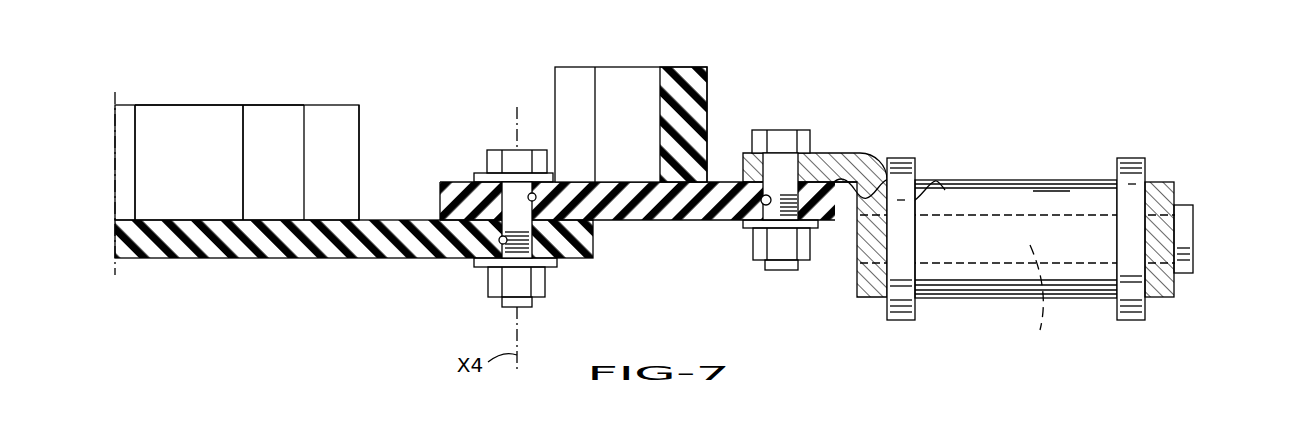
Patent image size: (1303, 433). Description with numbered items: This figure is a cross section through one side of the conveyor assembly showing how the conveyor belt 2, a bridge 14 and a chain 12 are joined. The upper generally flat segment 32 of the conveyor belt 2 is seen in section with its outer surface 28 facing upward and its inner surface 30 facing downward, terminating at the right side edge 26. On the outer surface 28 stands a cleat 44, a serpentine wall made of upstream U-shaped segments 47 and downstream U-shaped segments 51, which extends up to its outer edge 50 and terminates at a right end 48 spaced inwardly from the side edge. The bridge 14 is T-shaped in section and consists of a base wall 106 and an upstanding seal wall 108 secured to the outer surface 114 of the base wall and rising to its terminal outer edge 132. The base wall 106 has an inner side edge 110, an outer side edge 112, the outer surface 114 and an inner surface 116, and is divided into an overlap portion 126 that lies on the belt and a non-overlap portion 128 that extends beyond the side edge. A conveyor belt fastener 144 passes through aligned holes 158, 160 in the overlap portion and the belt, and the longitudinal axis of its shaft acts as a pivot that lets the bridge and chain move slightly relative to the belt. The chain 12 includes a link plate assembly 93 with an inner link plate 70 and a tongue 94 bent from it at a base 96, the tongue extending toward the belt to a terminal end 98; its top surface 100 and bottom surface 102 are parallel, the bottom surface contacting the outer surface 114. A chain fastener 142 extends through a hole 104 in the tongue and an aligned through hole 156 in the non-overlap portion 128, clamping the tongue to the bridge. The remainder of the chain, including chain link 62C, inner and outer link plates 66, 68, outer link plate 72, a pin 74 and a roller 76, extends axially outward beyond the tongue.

The conveyor belt 2 is at (380, 249).
The chain 12 is at (1053, 242).
The bridge 14 is at (619, 207).
The right side edge 26 is at (380, 249).
The outer surface 28 is at (380, 249).
The inner surface 30 is at (380, 249).
The upper generally flat segment 32 is at (195, 264).
The cleat 44 is at (210, 134).
The outer edge 50 is at (172, 100).
The upstream U-shaped segment 47 is at (200, 124).
The downstream U-shaped segment 51 is at (275, 112).
The right end 48 is at (359, 195).
The chain link 62C is at (1201, 258).
The inner link plate 66 is at (863, 305).
The outer link plate 68 is at (1133, 312).
The inner link plate 70 is at (882, 272).
The outer link plate 72 is at (1165, 176).
The pin 74 is at (979, 287).
The roller 76 is at (1016, 267).
The link plate assembly 93 is at (944, 206).
The tongue 94 is at (944, 206).
The top surface 100 is at (944, 206).
The base 96 is at (944, 206).
The terminal end 98 is at (944, 206).
The bottom surface 102 is at (1053, 242).
The hole 104 is at (944, 206).
The base wall 106 is at (619, 207).
The inner side edge 110 is at (673, 228).
The seal wall 108 is at (593, 93).
The outer edge 132 is at (593, 93).
The outer side edge 112 is at (944, 206).
The non-overlap portion 128 is at (729, 114).
The outer surface 114 is at (617, 65).
The inner surface 116 is at (619, 207).
The overlap portion 126 is at (619, 207).
The chain fastener 142 is at (764, 94).
The conveyor belt fastener 144 is at (443, 104).
The through hole 156 is at (760, 208).
The hole 158 is at (550, 244).
The hole 160 is at (520, 250).